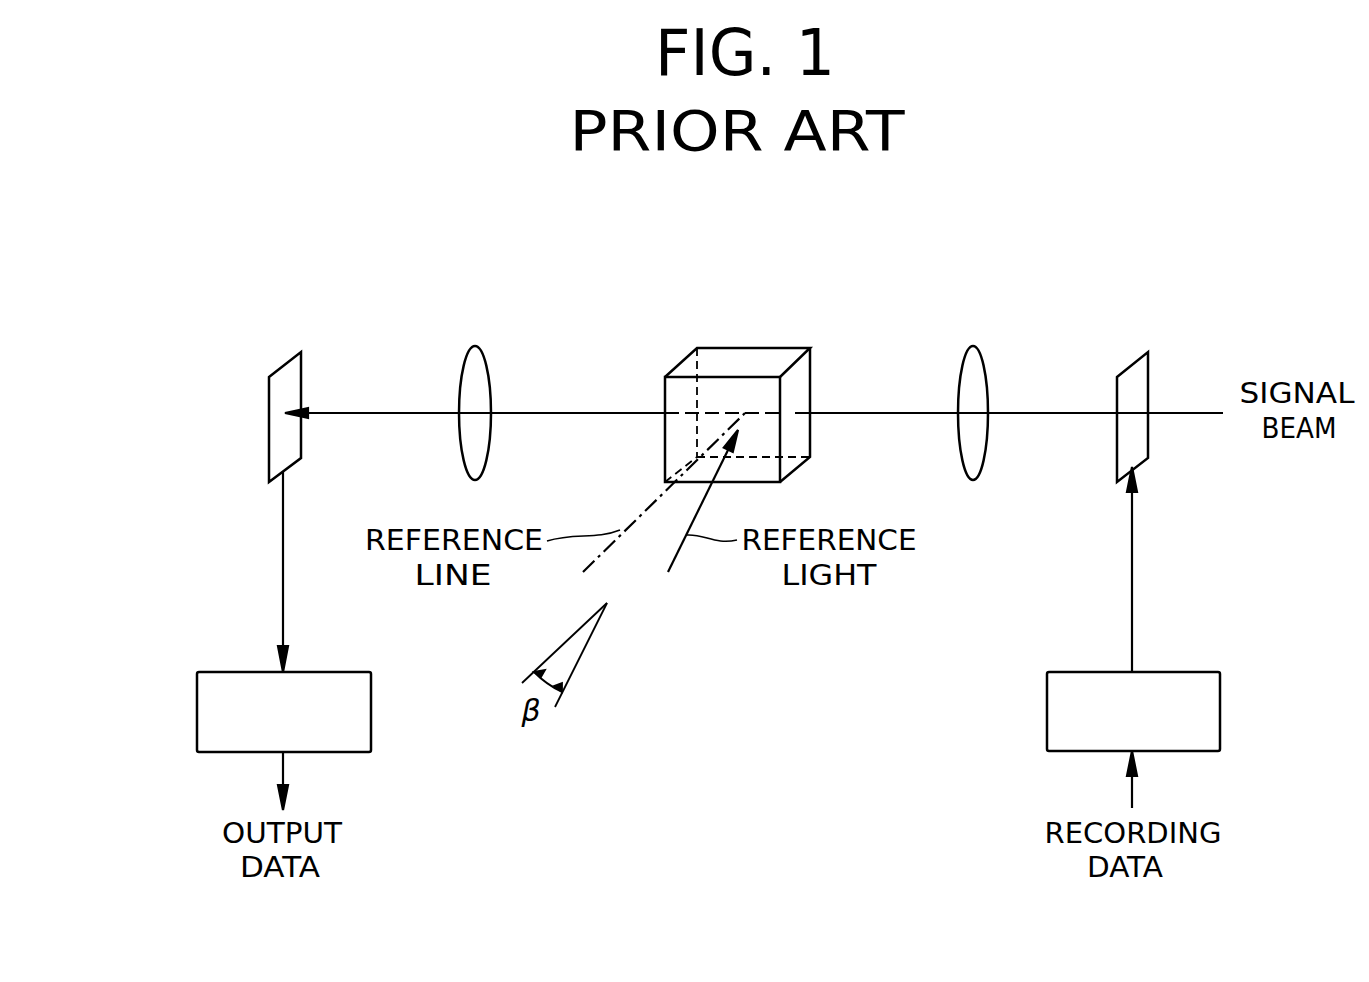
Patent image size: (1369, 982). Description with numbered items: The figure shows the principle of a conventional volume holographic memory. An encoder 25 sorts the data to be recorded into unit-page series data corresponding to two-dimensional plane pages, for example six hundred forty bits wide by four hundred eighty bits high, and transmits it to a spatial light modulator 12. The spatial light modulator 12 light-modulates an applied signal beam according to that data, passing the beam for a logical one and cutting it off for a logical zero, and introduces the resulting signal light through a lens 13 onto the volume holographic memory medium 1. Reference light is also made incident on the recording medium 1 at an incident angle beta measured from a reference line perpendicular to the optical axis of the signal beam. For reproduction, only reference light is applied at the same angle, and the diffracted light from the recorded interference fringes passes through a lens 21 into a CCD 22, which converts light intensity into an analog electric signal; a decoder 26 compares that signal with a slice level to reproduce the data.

The volume holographic memory medium 1 is at (748, 352).
The spatial light modulator 12 is at (1138, 350).
The lens 13 is at (973, 345).
The lens 21 is at (475, 345).
The CCD 22 is at (290, 350).
The encoder 25 is at (1047, 709).
The decoder 26 is at (197, 711).